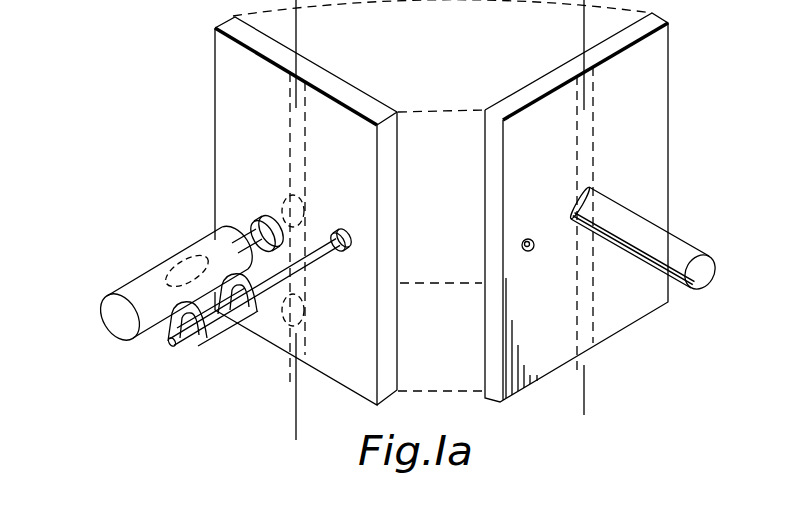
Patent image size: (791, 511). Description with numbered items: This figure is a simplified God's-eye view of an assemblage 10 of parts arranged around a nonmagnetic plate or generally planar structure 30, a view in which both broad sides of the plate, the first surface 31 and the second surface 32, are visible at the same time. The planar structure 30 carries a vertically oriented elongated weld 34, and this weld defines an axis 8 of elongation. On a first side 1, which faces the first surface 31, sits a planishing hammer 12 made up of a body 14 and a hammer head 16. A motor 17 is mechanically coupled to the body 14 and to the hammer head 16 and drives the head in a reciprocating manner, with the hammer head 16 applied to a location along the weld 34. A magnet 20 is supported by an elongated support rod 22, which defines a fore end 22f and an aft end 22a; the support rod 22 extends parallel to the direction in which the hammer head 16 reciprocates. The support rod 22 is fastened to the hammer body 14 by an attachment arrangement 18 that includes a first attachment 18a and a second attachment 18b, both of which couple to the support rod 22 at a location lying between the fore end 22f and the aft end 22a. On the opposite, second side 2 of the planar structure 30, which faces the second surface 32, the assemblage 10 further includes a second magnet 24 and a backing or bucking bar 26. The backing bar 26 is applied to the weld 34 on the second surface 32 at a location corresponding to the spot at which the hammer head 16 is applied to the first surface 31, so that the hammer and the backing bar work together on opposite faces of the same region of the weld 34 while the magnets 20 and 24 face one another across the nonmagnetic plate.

The first side 1 is at (148, 464).
The second side 2 is at (711, 353).
The axis of elongation 8 is at (296, 423).
The assemblage 10 is at (703, 413).
The planishing hammer 12 is at (104, 186).
The body 14 is at (137, 279).
The hammer head 16 is at (262, 214).
The motor 17 is at (187, 254).
The attachment arrangement 18 is at (128, 402).
The first attachment 18a is at (162, 336).
The second attachment 18b is at (255, 338).
The magnet 20 is at (341, 258).
The elongated support rod 22 is at (274, 303).
The aft end 22a is at (180, 347).
The fore end 22f is at (320, 244).
The second magnet 24 is at (528, 252).
The backing bar 26 is at (692, 244).
The planar structure 30 is at (215, 62).
The first surface 31 is at (232, 103).
The second surface 32 is at (652, 127).
The weld 34 is at (307, 138).